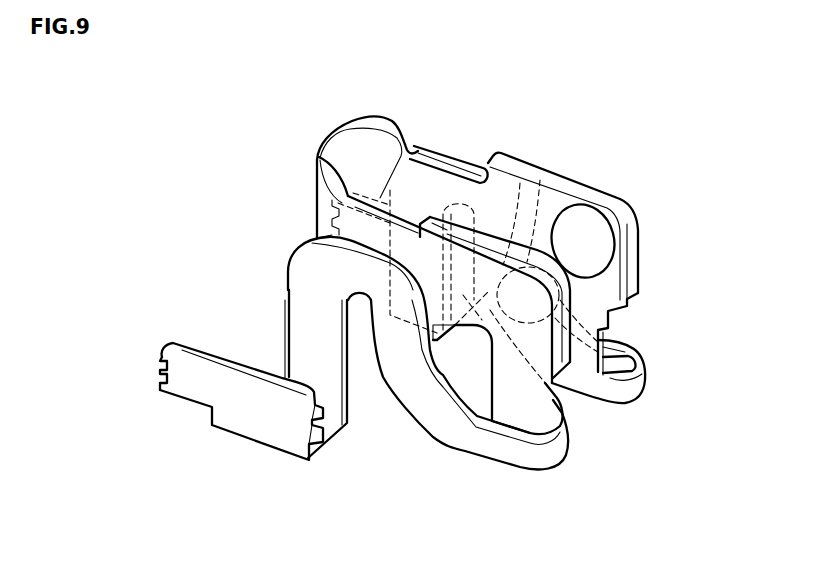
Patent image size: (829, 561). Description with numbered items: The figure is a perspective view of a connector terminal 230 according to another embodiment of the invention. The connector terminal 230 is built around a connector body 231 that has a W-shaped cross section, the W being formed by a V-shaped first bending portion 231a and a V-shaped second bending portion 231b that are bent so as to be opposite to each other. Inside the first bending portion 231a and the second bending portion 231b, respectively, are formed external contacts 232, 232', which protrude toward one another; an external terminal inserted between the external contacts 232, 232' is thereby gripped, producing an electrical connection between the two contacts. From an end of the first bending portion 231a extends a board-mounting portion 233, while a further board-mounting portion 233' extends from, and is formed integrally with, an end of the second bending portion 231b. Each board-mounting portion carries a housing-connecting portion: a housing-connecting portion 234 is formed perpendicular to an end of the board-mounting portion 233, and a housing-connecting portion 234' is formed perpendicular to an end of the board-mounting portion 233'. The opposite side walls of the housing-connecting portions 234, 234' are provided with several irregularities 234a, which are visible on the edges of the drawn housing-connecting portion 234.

The connector terminal 230 is at (202, 108).
The connector body 231 is at (318, 193).
The first bending portion 231a is at (562, 452).
The second bending portion 231b is at (633, 382).
The external contact 232 is at (605, 325).
The external contact 232' is at (578, 211).
The board-mounting portion 233 is at (330, 390).
The board-mounting portion 233' is at (476, 367).
The housing-connecting portion 234 is at (241, 423).
The irregularities 234a is at (160, 363).
The housing-connecting portion 234' is at (390, 196).